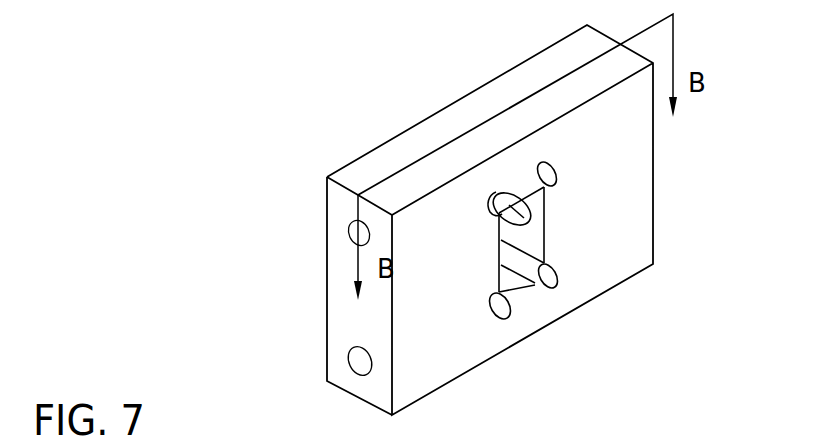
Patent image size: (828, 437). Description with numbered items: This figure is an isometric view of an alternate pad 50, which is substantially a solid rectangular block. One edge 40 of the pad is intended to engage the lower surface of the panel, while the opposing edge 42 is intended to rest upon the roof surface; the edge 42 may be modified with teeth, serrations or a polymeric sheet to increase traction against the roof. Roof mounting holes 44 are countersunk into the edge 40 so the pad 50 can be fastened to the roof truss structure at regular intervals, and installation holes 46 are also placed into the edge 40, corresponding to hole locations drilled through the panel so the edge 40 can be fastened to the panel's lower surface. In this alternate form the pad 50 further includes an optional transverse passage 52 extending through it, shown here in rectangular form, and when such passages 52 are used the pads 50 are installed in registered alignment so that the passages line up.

The edge 40 is at (629, 191).
The edge 42 is at (347, 298).
The roof mounting holes 44 is at (349, 229).
The installation holes 46 is at (528, 215).
The pad 50 is at (634, 325).
The transverse passage 52 is at (518, 285).